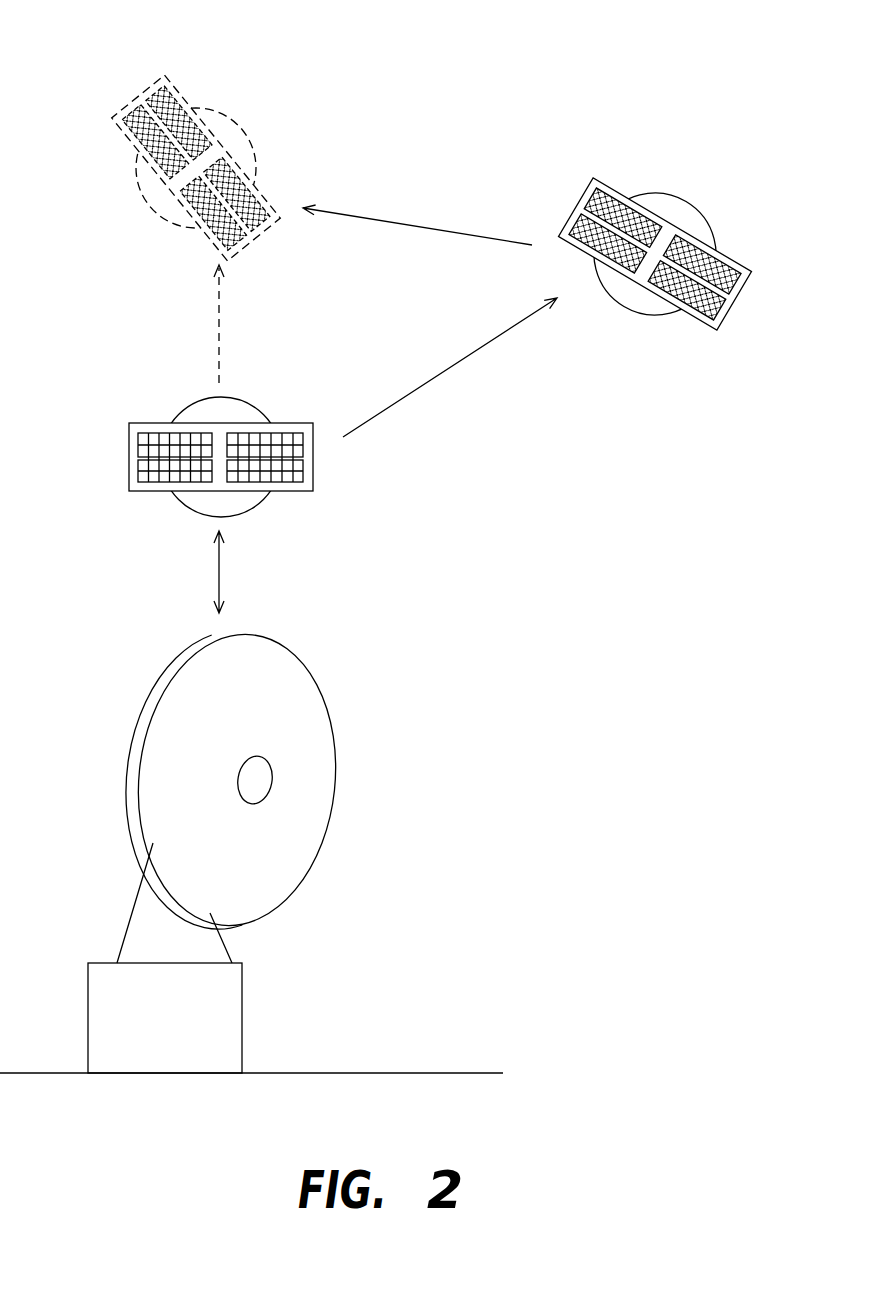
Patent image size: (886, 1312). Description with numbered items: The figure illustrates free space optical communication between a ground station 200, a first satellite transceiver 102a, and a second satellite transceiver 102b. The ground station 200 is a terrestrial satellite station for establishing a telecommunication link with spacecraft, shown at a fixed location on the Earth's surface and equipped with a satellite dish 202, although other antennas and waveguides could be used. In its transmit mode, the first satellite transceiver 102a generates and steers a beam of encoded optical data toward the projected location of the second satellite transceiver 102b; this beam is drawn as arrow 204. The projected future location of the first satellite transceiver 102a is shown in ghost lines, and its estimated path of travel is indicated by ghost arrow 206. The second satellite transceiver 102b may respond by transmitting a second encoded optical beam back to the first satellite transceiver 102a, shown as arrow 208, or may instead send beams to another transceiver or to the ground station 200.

The first satellite transceiver 102a is at (155, 81).
The second satellite transceiver 102b is at (600, 183).
The ground station 200 is at (256, 849).
The satellite dish 202 is at (150, 673).
The arrow representing encoded beam of optical data 204 is at (402, 403).
The ghost arrow representing estimated path of travel 206 is at (218, 328).
The arrow representing response beam of encoded optical data 208 is at (378, 218).